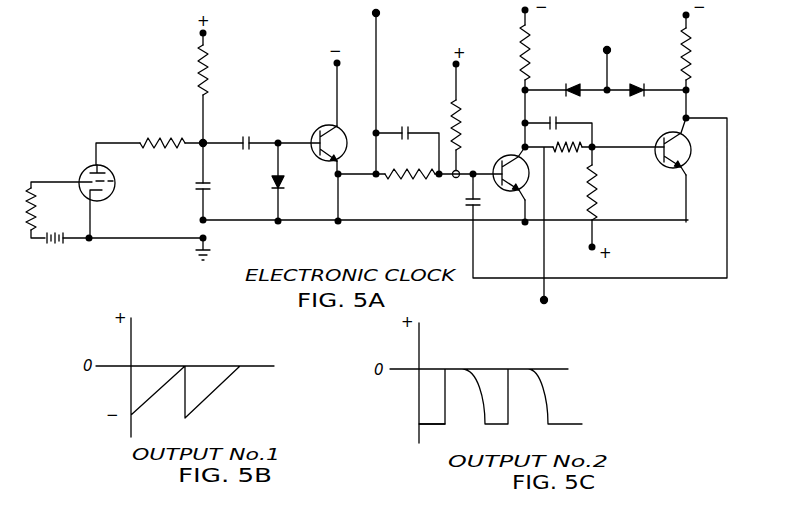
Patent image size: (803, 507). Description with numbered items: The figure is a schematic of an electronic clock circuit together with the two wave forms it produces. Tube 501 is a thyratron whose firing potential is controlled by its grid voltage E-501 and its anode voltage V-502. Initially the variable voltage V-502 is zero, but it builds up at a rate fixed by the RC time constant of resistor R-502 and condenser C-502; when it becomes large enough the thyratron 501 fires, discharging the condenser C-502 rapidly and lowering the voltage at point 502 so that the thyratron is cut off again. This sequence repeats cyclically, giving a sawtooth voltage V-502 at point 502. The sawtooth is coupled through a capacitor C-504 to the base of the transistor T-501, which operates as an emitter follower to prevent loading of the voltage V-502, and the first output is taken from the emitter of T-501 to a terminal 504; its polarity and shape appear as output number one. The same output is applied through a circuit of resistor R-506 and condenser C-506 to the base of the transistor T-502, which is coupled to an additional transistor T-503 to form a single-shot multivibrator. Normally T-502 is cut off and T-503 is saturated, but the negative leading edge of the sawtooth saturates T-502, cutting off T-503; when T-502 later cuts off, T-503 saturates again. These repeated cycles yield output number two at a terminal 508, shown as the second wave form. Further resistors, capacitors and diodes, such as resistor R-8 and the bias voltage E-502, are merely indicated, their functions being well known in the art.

In FIG. 5A, the thyratron 501 is at (116, 186).
In FIG. 5A, the grid voltage E-501 is at (58, 246).
In FIG. 5A, the anode voltage V-502 is at (200, 141).
In FIG. 5A, the resistor R-502 is at (208, 72).
In FIG. 5A, the point 502 is at (205, 147).
In FIG. 5A, the capacitor C-504 is at (244, 138).
In FIG. 5A, the condenser C-502 is at (206, 192).
In FIG. 5A, the transistor T-501 is at (314, 128).
In FIG. 5A, the terminal 504 is at (358, 16).
In FIG. 5A, the condenser C-506 is at (418, 115).
In FIG. 5A, the resistor R-8 is at (461, 128).
In FIG. 5A, the resistor R-506 is at (408, 181).
In FIG. 5A, the transistor T-502 is at (522, 189).
In FIG. 5A, the bias voltage source E-502 is at (615, 61).
In FIG. 5C, the bias voltage source E-502 is at (397, 418).
In FIG. 5A, the transistor T-503 is at (660, 138).
In FIG. 5A, the terminal 508 is at (558, 320).